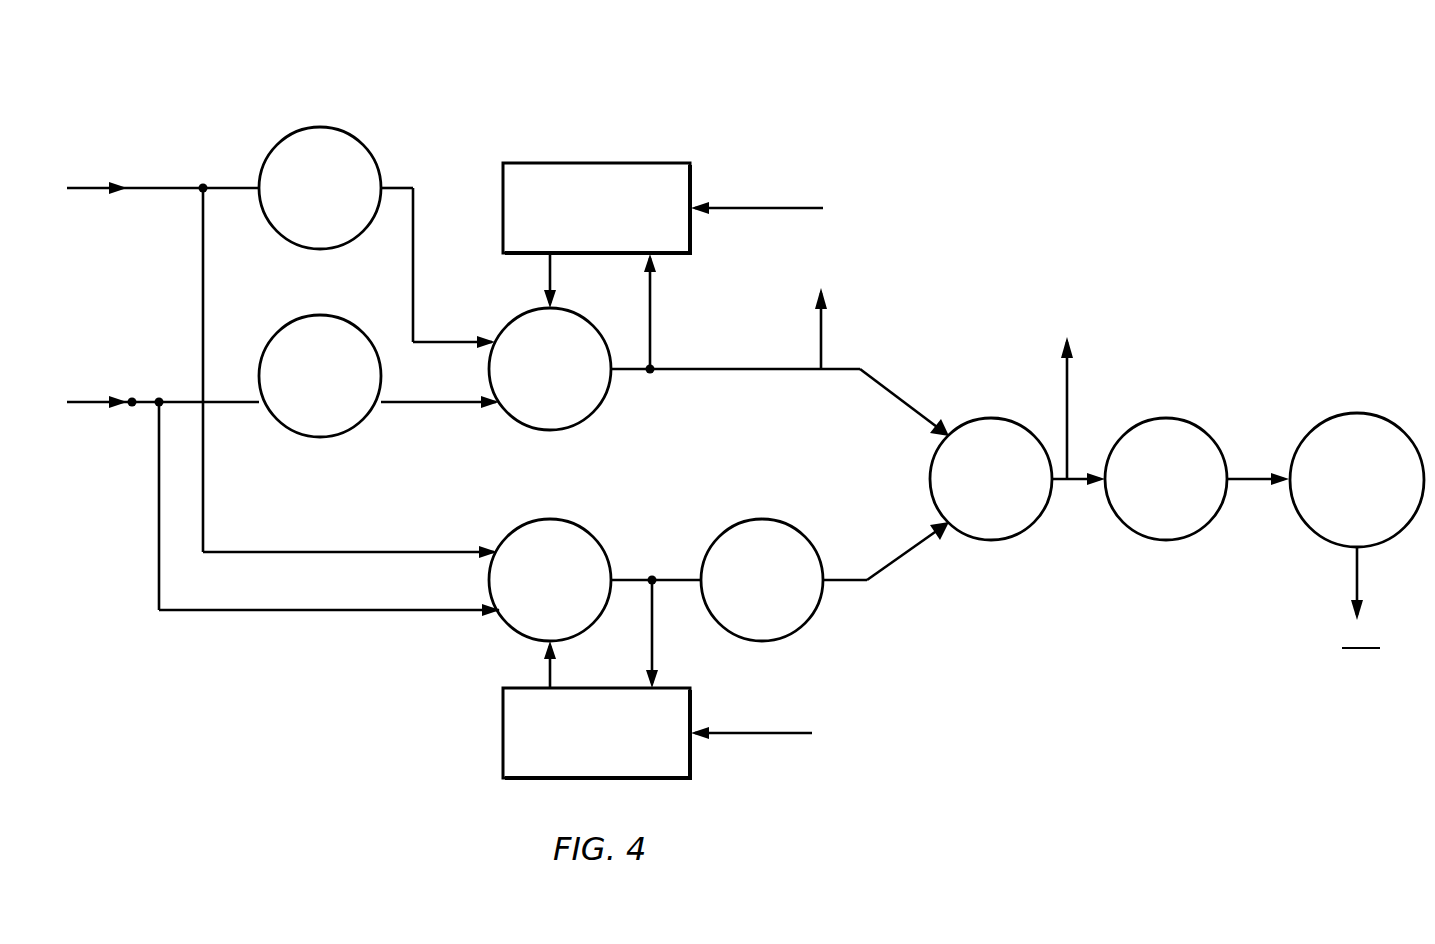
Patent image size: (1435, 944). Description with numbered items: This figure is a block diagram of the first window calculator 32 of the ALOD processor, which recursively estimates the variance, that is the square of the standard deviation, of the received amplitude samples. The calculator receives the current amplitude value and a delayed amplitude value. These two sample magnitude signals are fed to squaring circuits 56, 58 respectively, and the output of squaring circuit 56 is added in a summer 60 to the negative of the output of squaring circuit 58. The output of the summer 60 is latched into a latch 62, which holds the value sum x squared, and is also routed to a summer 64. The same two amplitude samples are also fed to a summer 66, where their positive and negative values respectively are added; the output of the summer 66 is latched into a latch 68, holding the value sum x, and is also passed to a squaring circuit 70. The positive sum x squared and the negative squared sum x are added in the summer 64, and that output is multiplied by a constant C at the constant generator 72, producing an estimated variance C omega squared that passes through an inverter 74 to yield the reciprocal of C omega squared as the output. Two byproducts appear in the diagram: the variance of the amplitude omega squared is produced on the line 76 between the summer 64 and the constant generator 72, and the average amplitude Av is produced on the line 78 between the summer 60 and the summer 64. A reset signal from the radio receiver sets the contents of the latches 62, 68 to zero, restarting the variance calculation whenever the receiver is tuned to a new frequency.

The first window calculator 32 is at (1038, 272).
The squaring circuit 56 is at (363, 145).
The squaring circuit 58 is at (362, 334).
The summer 60 is at (593, 413).
The latch 62 is at (691, 244).
The summer 64 is at (1034, 522).
The summer 66 is at (592, 538).
The latch 68 is at (691, 767).
The squaring circuit 70 is at (805, 623).
The constant generator 72 is at (1209, 522).
The inverter 74 is at (1395, 535).
The line 76 is at (1068, 397).
The line 78 is at (822, 335).